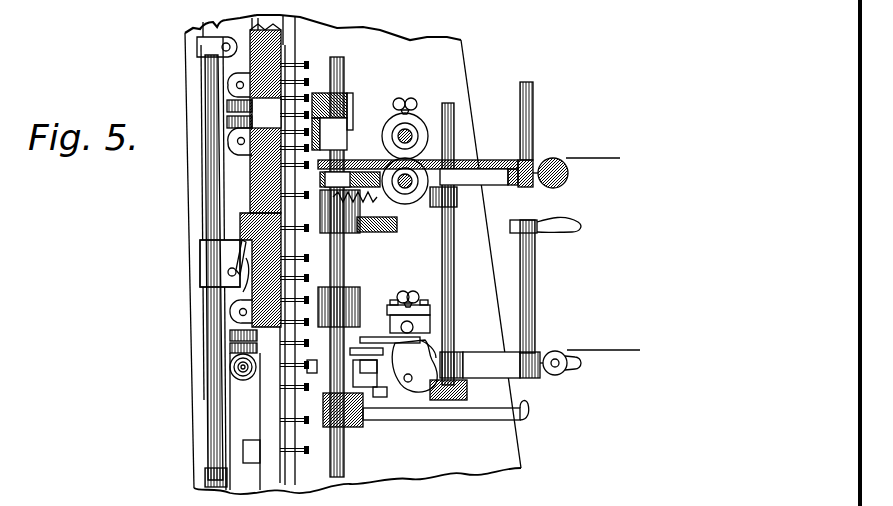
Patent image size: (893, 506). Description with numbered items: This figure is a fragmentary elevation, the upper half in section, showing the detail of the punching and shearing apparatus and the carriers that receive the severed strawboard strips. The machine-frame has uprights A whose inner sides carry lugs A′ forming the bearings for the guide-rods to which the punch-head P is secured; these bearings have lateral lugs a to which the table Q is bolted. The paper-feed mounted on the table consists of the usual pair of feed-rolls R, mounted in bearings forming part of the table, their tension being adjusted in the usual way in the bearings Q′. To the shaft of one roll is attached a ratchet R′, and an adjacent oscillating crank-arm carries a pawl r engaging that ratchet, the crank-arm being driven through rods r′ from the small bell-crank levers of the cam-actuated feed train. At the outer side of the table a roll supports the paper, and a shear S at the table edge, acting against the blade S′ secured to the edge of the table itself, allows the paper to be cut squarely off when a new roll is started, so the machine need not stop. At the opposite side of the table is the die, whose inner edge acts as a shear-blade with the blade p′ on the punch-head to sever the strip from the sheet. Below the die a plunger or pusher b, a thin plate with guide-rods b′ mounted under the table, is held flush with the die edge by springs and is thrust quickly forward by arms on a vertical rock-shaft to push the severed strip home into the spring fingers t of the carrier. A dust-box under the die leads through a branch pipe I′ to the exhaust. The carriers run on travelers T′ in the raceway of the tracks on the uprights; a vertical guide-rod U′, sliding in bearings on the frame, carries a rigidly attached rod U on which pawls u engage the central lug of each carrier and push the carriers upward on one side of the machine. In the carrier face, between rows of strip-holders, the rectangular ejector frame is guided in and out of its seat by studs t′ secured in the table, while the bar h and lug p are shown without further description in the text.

The vertical guide-rod U′ is at (197, 47).
The rod U is at (209, 212).
The traveler T′ is at (228, 145).
The pawl u is at (238, 267).
The stud t′ is at (254, 372).
The spring fingers t is at (299, 257).
The punch-head P is at (348, 106).
The pin p is at (345, 131).
The shear-blade p′ is at (306, 114).
The table Q is at (498, 185).
The slide block a′ is at (350, 202).
The lateral lug a is at (324, 163).
The plunger or pusher b is at (320, 210).
The bar h is at (381, 224).
The guide-rod b′ is at (442, 207).
The feed-roll R is at (382, 138).
The bearing Q′ is at (414, 110).
The shear blade S′ is at (520, 160).
The shear S is at (532, 90).
The ratchet R′ is at (590, 372).
The branch pipe I′ is at (481, 421).
The lug A′ is at (355, 234).
The upright A is at (408, 262).
The pawl r is at (385, 349).
The rod r′ is at (395, 405).